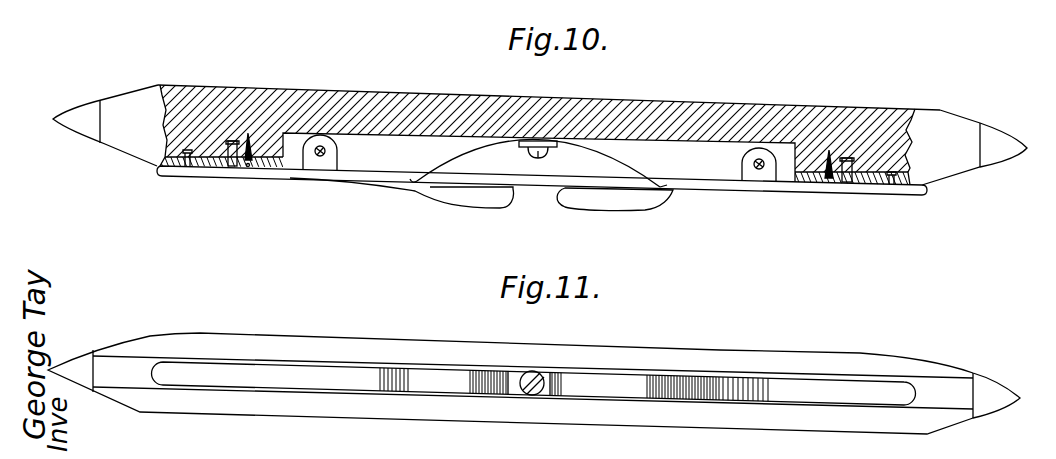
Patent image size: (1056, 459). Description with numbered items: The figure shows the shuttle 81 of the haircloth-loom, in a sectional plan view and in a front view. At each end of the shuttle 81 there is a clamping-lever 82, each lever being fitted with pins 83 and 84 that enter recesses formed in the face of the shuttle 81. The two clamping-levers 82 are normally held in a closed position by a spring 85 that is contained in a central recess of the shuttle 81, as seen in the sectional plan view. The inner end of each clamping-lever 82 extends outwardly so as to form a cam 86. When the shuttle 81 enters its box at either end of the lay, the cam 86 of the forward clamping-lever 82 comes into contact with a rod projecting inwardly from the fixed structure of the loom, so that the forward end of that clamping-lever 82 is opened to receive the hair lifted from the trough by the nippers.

In FIG. 10, the shuttle 81 is at (596, 108).
In FIG. 11, the shuttle 81 is at (585, 350).
In FIG. 10, the clamping-lever 82 is at (242, 172).
In FIG. 11, the clamping-lever 82 is at (534, 383).
In FIG. 10, the pin 83 is at (233, 141).
In FIG. 10, the pin 84 is at (188, 150).
In FIG. 10, the spring 85 is at (578, 150).
In FIG. 10, the cam 86 is at (473, 197).
In FIG. 11, the cam 86 is at (574, 385).